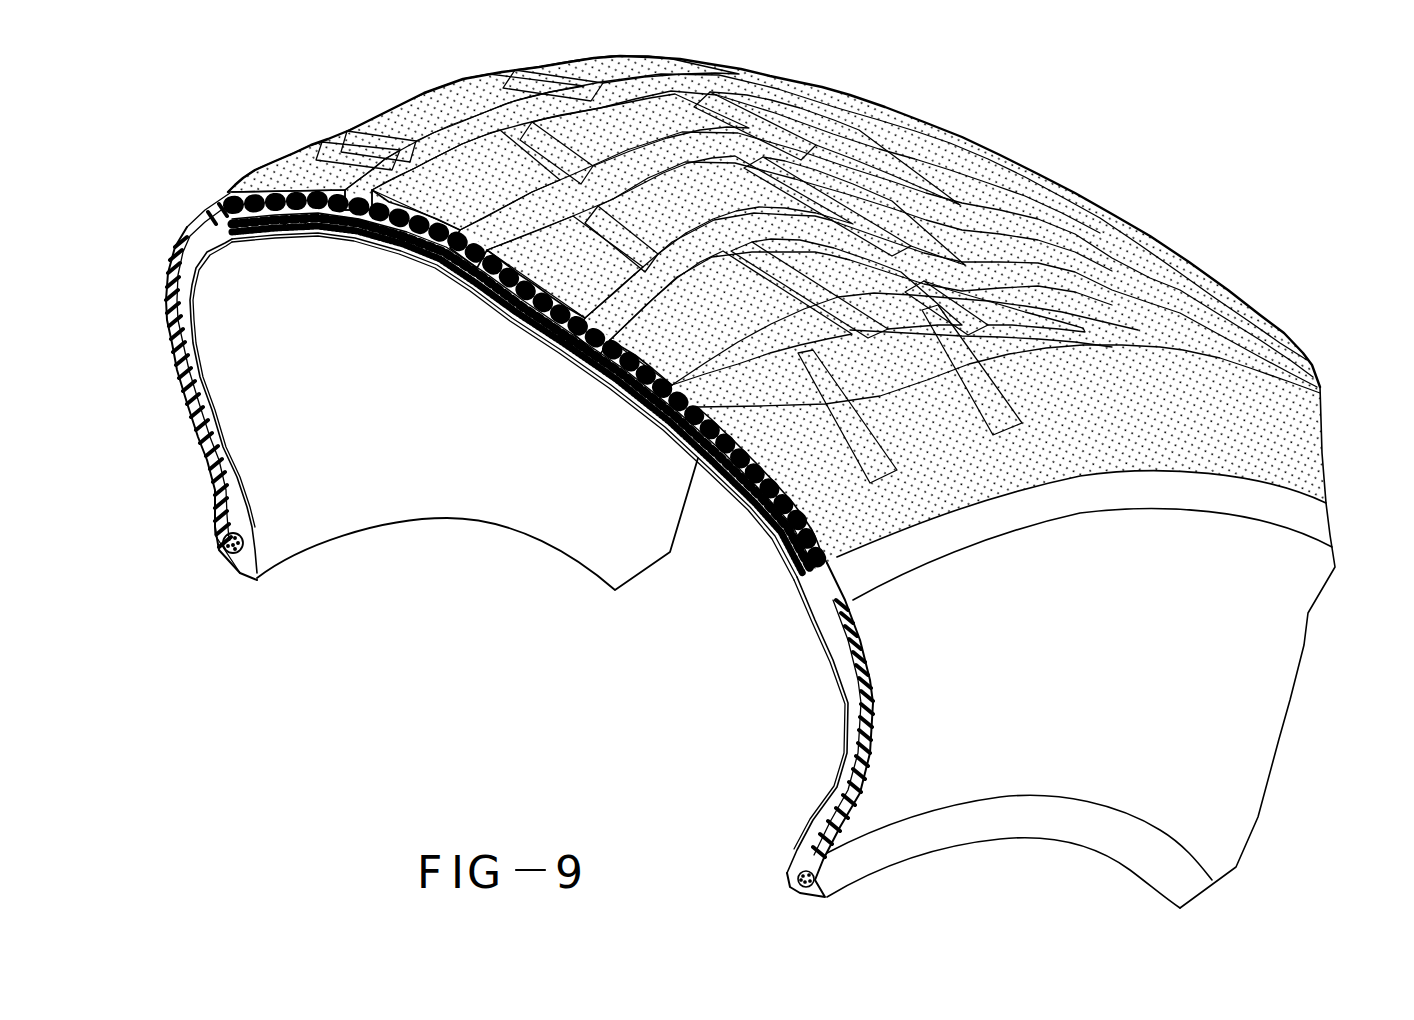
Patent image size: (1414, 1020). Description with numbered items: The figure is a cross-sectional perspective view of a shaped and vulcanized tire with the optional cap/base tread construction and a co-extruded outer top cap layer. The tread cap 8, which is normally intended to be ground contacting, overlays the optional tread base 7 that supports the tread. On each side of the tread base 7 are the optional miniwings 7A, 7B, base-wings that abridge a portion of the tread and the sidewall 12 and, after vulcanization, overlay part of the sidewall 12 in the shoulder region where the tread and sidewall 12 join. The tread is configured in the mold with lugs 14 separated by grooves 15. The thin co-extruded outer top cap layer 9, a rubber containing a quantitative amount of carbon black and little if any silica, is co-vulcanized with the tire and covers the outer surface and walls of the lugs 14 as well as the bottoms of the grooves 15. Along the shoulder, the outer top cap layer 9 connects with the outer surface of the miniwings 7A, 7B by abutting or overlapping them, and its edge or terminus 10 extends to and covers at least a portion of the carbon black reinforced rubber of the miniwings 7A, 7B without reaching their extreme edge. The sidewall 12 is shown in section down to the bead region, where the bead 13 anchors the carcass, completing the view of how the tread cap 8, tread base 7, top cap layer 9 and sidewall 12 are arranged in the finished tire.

The tread base 7 is at (351, 228).
The miniwing 7A is at (822, 558).
The miniwing 7B is at (822, 558).
The tread cap 8 is at (277, 200).
The outer top cap layer 9 is at (1270, 421).
The terminus 10 is at (1285, 487).
The sidewall 12 is at (166, 325).
The bead core 13 is at (236, 553).
The lug 14 is at (437, 106).
The groove 15 is at (392, 138).